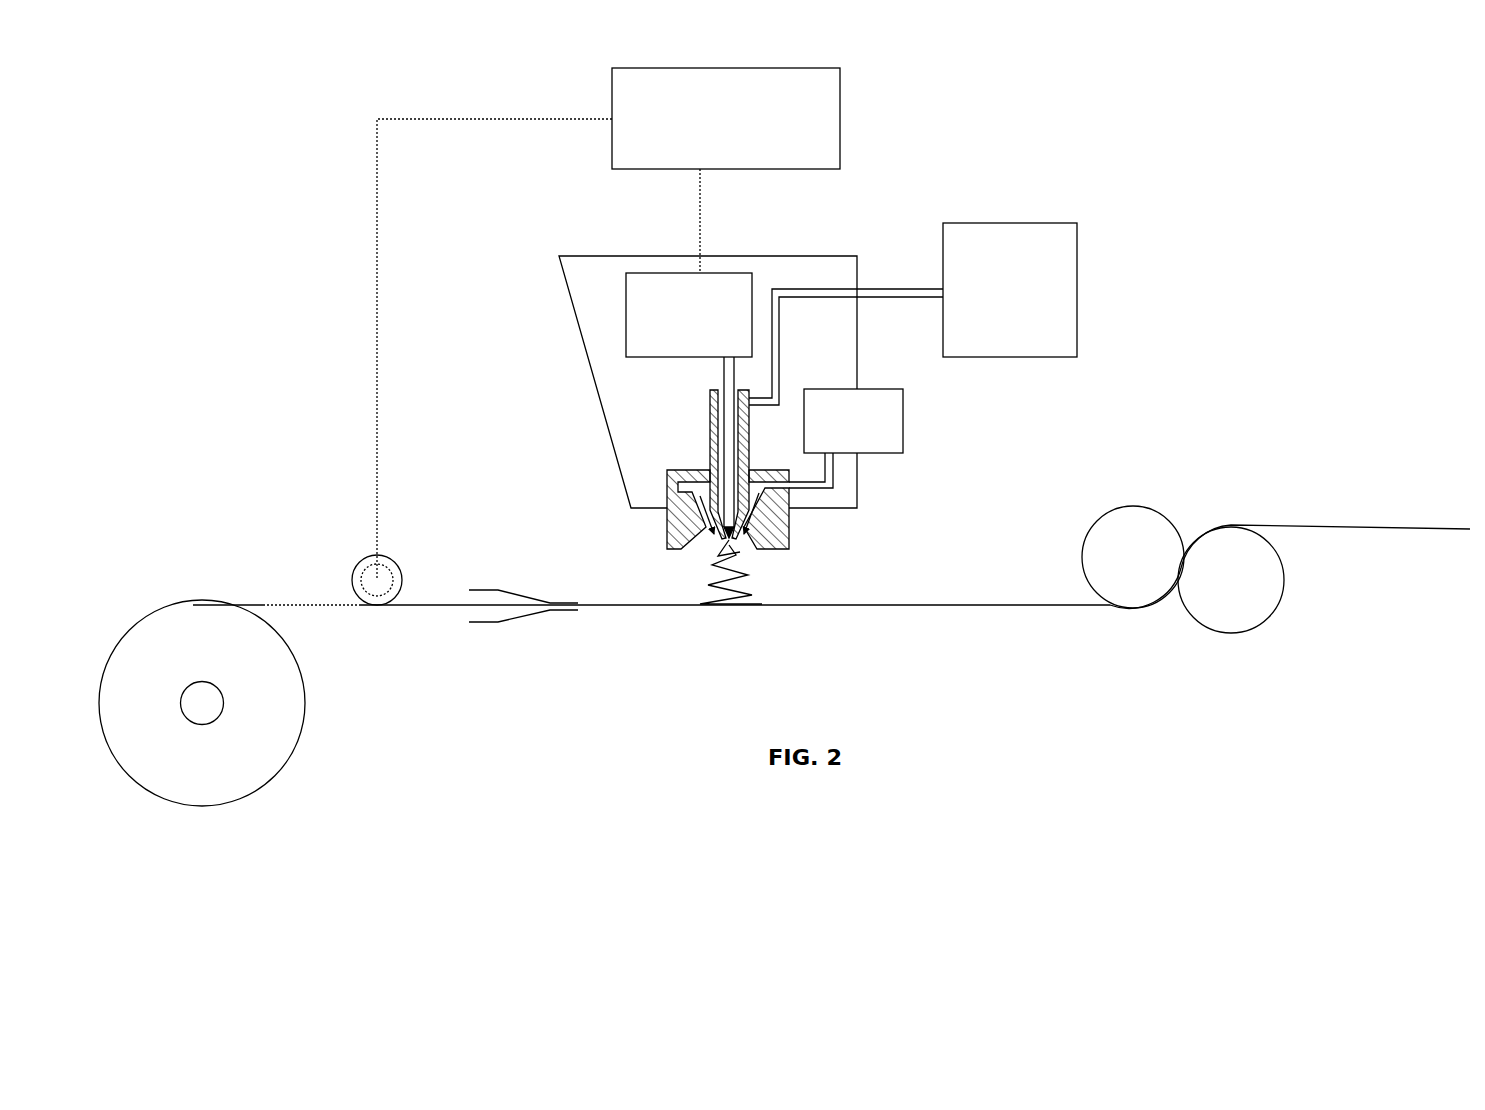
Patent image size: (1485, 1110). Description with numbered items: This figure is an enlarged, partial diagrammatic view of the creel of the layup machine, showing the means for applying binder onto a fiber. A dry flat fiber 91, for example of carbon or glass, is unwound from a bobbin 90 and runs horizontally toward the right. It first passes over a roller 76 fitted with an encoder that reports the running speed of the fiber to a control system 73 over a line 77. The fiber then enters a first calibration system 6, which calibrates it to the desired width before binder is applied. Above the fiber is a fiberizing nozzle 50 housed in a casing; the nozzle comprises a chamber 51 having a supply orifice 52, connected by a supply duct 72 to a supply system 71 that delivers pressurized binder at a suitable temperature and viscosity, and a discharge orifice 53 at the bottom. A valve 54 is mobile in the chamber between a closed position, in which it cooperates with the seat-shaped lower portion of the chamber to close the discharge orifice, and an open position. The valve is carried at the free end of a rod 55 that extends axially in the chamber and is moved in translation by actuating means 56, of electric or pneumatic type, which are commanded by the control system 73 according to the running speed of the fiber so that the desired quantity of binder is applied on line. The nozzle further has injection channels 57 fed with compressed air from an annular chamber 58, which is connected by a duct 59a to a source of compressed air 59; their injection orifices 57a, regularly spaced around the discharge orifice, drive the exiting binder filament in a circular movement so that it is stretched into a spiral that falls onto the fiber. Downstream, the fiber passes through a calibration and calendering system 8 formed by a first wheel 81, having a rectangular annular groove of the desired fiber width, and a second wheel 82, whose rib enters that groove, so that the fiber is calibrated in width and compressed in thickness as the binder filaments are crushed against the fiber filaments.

The first calibration system 6 is at (497, 623).
The calibration and calendering system 8 is at (1127, 612).
The fiberizing nozzle 50 is at (572, 307).
The chamber 51 is at (710, 412).
The supply orifice 52 is at (752, 398).
The discharge orifice 53 is at (722, 548).
The valve 54 is at (712, 480).
The rod 55 is at (724, 372).
The actuating means 56 is at (700, 326).
The injection channels 57 is at (790, 520).
The injection orifices 57a is at (757, 551).
The annular chamber 58 is at (678, 485).
The source of compressed air 59 is at (866, 431).
The duct 59a is at (833, 473).
The supply system 71 is at (1022, 304).
The supply duct 72 is at (912, 289).
The control system 73 is at (729, 125).
The roller 76 is at (357, 565).
The line 77 is at (377, 366).
The first wheel 81 is at (1133, 523).
The second wheel 82 is at (1237, 608).
The bobbin 90 is at (192, 788).
The fiber 91 is at (257, 603).